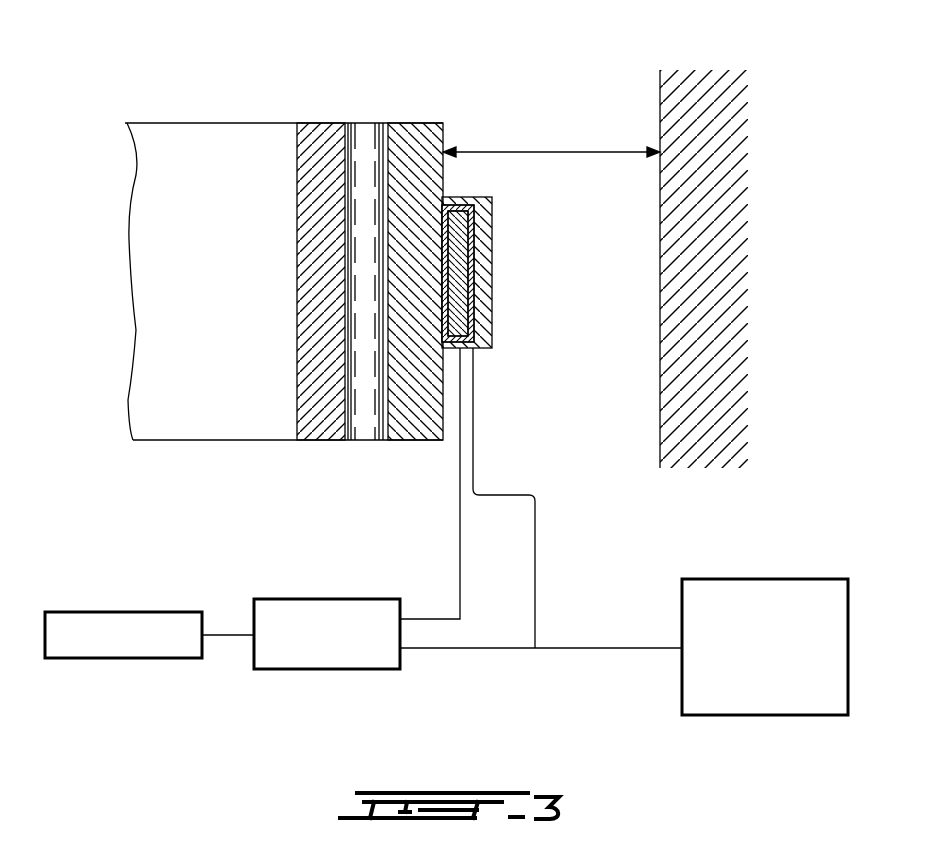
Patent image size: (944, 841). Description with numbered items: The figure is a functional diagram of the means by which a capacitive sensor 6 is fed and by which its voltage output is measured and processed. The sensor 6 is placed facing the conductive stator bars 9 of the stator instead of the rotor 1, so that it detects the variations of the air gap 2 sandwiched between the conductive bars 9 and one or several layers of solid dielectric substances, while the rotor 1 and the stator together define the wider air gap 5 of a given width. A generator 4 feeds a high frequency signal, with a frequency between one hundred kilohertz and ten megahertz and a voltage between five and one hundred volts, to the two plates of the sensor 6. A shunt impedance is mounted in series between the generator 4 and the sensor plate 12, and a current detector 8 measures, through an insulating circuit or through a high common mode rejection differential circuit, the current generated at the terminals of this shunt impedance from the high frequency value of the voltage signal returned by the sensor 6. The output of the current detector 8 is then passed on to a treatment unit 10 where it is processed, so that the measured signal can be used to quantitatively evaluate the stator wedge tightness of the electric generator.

The rotor 1 is at (660, 108).
The air gap 2 is at (367, 153).
The generator 4 is at (786, 590).
The air gap 5 is at (551, 137).
The capacitive sensor 6 is at (492, 318).
The current detector 8 is at (335, 605).
The stator bars 9 is at (210, 140).
The treatment unit 10 is at (118, 620).
The sensor plate 12 is at (492, 258).